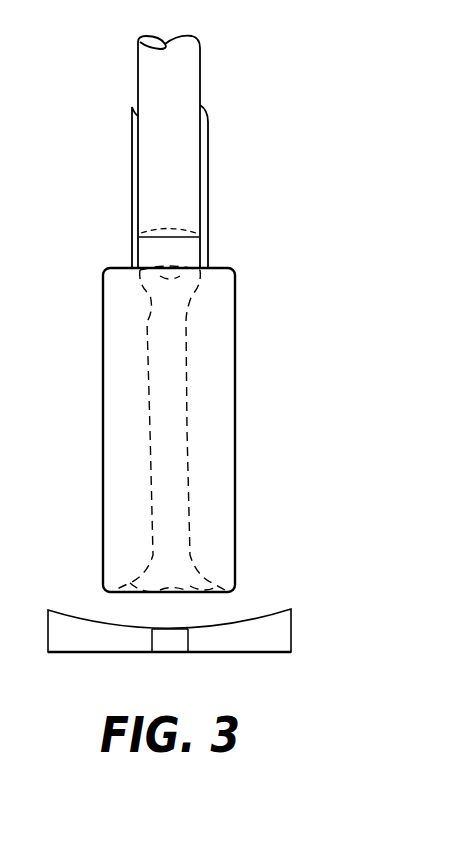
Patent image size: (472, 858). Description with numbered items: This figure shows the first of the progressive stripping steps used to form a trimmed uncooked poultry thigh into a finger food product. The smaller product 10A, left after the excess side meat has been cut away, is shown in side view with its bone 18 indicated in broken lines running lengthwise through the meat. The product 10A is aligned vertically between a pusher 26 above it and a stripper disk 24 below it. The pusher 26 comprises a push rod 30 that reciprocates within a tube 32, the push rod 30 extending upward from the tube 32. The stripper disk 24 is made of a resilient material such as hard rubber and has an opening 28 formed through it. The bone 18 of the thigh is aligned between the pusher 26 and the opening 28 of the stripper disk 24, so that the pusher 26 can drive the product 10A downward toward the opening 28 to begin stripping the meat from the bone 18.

The product 10A is at (232, 355).
The bone 18 is at (147, 403).
The stripper disk 24 is at (238, 651).
The pusher 26 is at (214, 163).
The opening 28 is at (187, 640).
The push rod 30 is at (183, 70).
The tube 32 is at (202, 213).